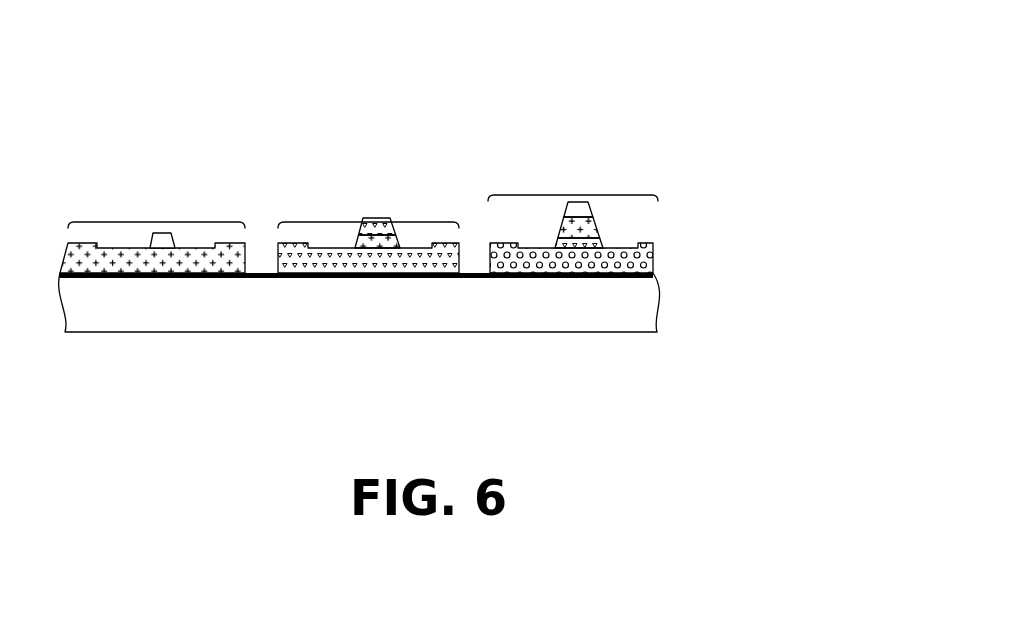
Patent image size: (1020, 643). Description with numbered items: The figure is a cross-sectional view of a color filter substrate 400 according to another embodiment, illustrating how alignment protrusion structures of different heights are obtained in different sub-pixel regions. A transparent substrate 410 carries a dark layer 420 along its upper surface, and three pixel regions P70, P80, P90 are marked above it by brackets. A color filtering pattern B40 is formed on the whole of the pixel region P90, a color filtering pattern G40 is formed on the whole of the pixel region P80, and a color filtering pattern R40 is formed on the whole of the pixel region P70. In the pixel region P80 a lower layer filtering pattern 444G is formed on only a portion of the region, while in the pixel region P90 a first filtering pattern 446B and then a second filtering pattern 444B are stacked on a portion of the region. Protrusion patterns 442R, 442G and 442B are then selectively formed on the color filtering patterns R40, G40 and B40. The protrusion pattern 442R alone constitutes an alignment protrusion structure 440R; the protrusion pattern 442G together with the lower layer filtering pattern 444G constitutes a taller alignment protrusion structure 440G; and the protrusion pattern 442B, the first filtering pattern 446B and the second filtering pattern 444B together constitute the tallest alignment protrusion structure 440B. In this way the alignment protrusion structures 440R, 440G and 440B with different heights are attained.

The color filter substrate 400 is at (772, 456).
The transparent substrate 410 is at (600, 305).
The black matrix 420 is at (473, 278).
The alignment protrusion structure 440R is at (160, 240).
The protrusion pattern 442R is at (165, 235).
The color filtering pattern R40 is at (113, 262).
The alignment protrusion structure 440G is at (431, 129).
The protrusion pattern 442G is at (377, 227).
The lower layer filtering pattern 444G is at (392, 242).
The color filtering pattern G40 is at (330, 277).
The alignment protrusion structure 440B is at (715, 228).
The protrusion pattern 442B is at (580, 210).
The second filtering pattern 444B is at (583, 228).
The first filtering pattern 446B is at (578, 240).
The color filtering pattern B40 is at (627, 280).
The pixel region P70 is at (117, 222).
The pixel region P80 is at (323, 222).
The pixel region P90 is at (620, 195).